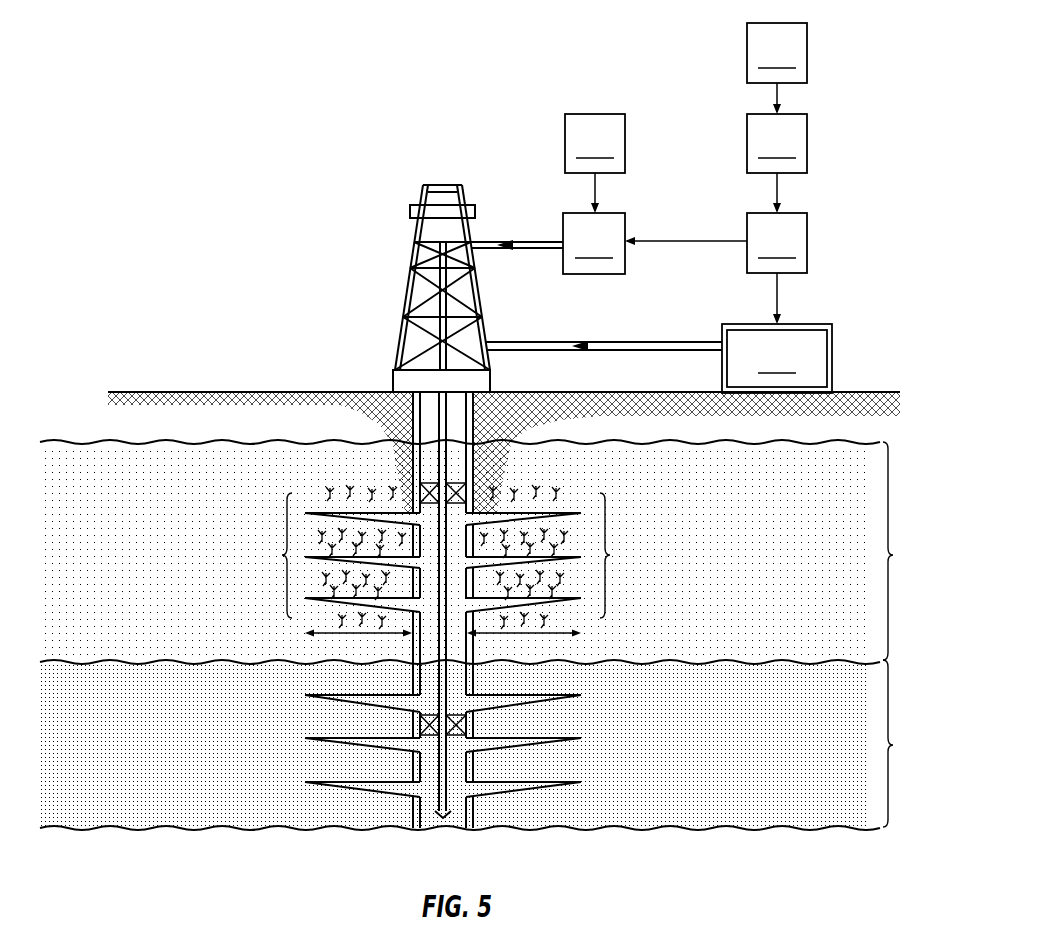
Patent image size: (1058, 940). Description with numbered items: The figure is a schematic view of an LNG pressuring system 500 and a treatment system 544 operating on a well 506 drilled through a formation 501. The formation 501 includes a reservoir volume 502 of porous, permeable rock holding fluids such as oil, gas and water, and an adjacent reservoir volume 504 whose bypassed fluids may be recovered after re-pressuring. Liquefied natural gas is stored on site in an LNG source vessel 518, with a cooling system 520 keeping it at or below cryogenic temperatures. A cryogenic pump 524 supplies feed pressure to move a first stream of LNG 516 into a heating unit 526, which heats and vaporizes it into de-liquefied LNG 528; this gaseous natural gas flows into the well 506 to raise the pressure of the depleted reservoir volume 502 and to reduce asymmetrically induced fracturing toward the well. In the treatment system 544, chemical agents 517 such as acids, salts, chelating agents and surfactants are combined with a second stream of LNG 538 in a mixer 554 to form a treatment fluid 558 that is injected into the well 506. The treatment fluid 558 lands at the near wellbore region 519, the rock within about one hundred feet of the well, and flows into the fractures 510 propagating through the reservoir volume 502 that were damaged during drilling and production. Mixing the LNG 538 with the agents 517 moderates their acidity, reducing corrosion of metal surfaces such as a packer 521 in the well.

The LNG pressuring system 500 is at (691, 208).
The formation 501 is at (93, 426).
The reservoir volume 502 is at (488, 550).
The adjacent reservoir volume 504 is at (488, 745).
The well 506 is at (428, 443).
The fractures 510 is at (444, 641).
The first stream of LNG 516 is at (778, 298).
The chemical agents 517 is at (595, 143).
The LNG source vessel 518 is at (777, 143).
The near wellbore region 519 is at (343, 634).
The cooling system 520 is at (777, 53).
The packer 521 is at (416, 494).
The cryogenic pump 524 is at (777, 243).
The heating unit 526 is at (777, 358).
The de-liquefied LNG 528 is at (610, 351).
The second stream of LNG 538 is at (685, 242).
The treatment system 544 is at (638, 109).
The mixer 554 is at (594, 243).
The treatment fluid 558 is at (525, 249).